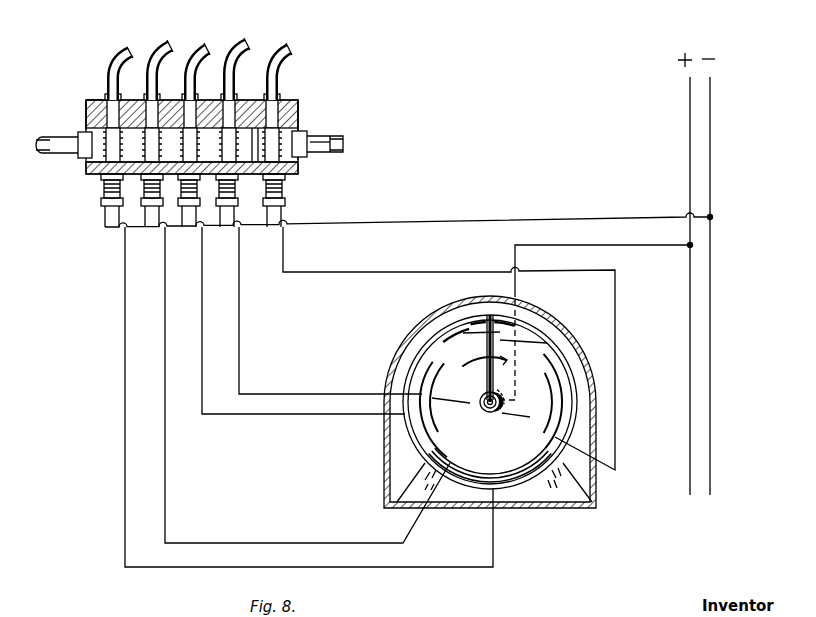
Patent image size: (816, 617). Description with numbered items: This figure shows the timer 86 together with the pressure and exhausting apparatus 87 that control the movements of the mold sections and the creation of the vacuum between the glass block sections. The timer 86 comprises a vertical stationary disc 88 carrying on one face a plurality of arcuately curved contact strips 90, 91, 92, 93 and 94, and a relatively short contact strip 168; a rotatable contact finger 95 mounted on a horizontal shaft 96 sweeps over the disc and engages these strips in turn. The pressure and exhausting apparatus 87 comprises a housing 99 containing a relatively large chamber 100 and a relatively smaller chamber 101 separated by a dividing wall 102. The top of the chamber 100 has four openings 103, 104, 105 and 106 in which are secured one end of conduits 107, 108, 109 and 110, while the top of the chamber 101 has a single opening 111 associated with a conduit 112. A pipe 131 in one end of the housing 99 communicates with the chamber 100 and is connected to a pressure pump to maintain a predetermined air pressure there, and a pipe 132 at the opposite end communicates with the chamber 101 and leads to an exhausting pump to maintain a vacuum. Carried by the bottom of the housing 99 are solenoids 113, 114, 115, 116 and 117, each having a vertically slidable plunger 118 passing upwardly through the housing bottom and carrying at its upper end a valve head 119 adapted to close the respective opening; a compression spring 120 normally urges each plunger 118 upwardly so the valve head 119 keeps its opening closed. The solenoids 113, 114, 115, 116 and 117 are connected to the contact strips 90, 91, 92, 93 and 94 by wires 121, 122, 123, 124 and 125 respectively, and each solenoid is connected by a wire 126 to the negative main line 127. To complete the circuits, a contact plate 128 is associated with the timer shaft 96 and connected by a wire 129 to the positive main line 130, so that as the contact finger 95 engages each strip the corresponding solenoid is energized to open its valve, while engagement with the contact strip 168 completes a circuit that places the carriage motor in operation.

The timer 86 is at (545, 318).
The pressure and exhausting apparatus 87 is at (298, 101).
The stationary disc 88 is at (432, 336).
The contact strip 90 is at (566, 356).
The contact strip 91 is at (508, 468).
The contact strip 92 is at (404, 422).
The contact strip 93 is at (436, 416).
The contact strip 94 is at (557, 404).
The rotatable contact finger 95 is at (504, 312).
The horizontal shaft 96 is at (492, 420).
The housing 99 is at (93, 100).
The chamber 100 is at (160, 100).
The chamber 101 is at (300, 130).
The dividing wall 102 is at (209, 145).
The opening 103 is at (86, 118).
The opening 104 is at (126, 100).
The opening 105 is at (198, 100).
The opening 106 is at (238, 100).
The conduit 107 is at (115, 56).
The conduit 108 is at (160, 52).
The conduit 109 is at (197, 56).
The conduit 110 is at (236, 44).
The opening 111 is at (298, 110).
The conduit 112 is at (276, 58).
The solenoid 113 is at (103, 203).
The solenoid 114 is at (146, 210).
The solenoid 115 is at (184, 210).
The solenoid 116 is at (230, 204).
The solenoid 117 is at (286, 190).
The plunger 118 is at (90, 172).
The valve head 119 is at (86, 134).
The compression spring 120 is at (132, 146).
The wire 121 is at (125, 452).
The wire 122 is at (168, 440).
The wire 123 is at (276, 415).
The wire 124 is at (290, 394).
The wire 125 is at (352, 273).
The wire 126 is at (366, 223).
The negative main line 127 is at (710, 188).
The contact plate 128 is at (489, 392).
The wire 129 is at (610, 245).
The positive main line 130 is at (690, 322).
The pipe 131 is at (40, 156).
The pipe 132 is at (322, 152).
The contact strip 168 is at (468, 316).